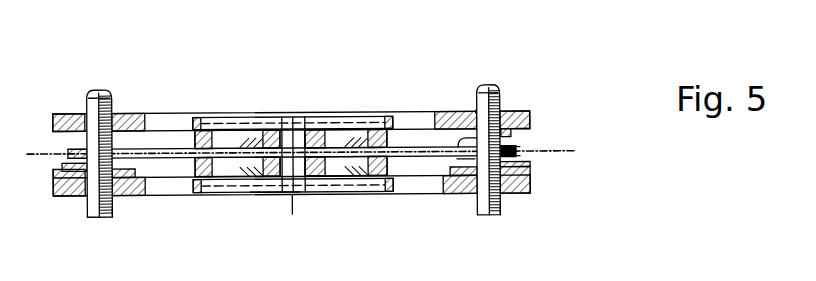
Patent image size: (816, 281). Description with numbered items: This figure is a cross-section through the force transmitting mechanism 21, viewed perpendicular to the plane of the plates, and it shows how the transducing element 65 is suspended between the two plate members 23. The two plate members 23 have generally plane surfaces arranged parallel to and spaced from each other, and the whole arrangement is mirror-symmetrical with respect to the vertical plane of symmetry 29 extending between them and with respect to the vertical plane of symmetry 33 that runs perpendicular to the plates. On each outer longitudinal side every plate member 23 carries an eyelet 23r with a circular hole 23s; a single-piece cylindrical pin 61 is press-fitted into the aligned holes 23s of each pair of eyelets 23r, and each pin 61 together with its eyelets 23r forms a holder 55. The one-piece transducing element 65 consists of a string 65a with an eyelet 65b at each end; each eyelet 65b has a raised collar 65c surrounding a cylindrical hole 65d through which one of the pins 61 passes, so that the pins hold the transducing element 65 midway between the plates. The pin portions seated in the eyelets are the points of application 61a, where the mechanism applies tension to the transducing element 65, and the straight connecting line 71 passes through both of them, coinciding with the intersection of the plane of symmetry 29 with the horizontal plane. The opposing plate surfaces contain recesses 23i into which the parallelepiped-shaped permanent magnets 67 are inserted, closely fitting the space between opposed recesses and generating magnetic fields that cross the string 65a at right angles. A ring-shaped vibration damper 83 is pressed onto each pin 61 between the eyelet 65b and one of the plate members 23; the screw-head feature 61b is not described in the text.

The plate member 23 is at (64, 112).
The circular hole 23s is at (476, 110).
The eyelet 23r is at (513, 111).
The recess 23i is at (333, 198).
The pin 61 is at (98, 217).
The point of application 61a is at (136, 130).
The screw head 61b is at (101, 91).
The transducing element 65 is at (169, 140).
The string 65a is at (248, 122).
The eyelet 65b is at (520, 133).
The raised collar 65c is at (73, 197).
The cylindrical hole 65d is at (528, 111).
The permanent magnet 67 is at (354, 128).
The vertical plane of symmetry 33 is at (292, 103).
The vertical plane of symmetry 29 is at (560, 151).
The points-of-application-connecting line 71 is at (577, 152).
The ring-shaped vibration damper 83 is at (533, 176).
The holder 55 is at (122, 212).
The force transmitting mechanism 21 is at (272, 201).